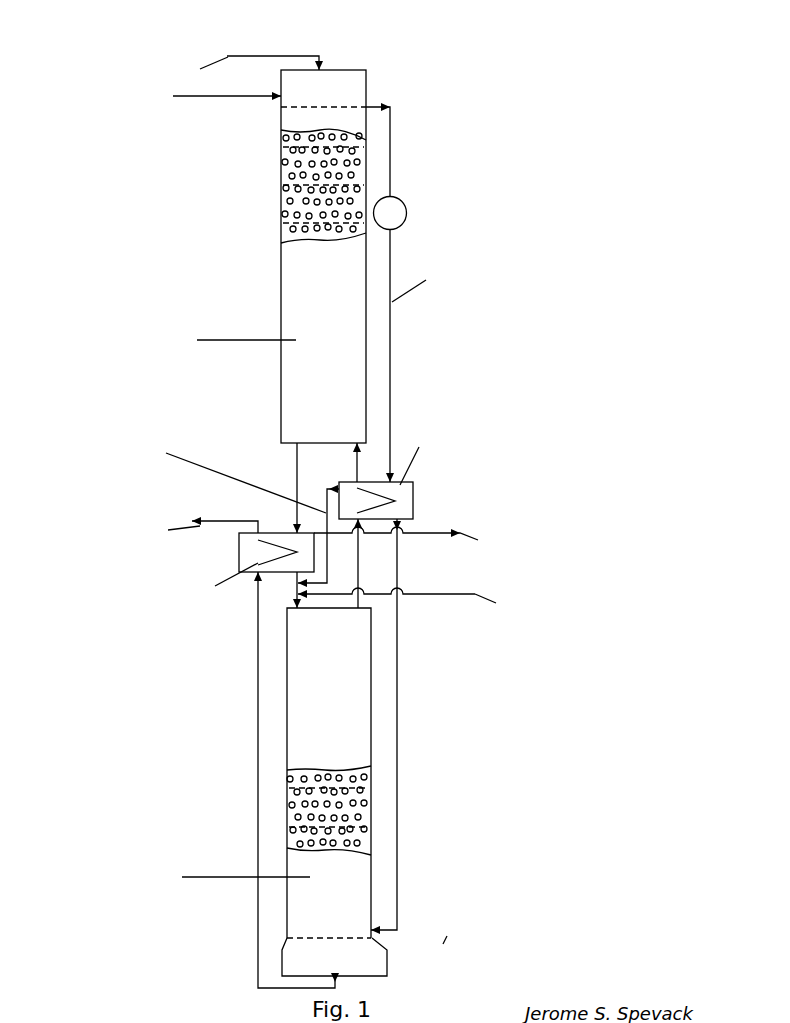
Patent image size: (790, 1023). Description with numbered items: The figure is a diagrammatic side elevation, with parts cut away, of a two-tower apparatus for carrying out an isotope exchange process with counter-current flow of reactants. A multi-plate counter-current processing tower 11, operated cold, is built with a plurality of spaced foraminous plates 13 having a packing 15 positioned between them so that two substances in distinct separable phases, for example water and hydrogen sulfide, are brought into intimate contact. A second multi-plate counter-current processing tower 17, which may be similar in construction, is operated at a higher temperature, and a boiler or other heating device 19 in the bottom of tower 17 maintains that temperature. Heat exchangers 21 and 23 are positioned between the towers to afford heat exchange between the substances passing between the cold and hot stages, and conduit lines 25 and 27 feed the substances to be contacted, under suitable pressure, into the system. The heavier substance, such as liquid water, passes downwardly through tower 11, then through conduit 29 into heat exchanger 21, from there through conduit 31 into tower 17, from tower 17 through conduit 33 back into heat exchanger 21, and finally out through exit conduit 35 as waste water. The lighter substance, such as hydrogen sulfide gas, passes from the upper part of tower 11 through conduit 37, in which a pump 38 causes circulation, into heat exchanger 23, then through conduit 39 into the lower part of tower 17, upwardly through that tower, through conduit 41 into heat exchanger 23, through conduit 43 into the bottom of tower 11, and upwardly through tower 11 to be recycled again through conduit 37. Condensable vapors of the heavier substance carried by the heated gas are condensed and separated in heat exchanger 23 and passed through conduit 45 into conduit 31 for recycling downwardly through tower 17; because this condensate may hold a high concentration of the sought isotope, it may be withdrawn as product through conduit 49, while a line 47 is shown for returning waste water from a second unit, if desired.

The multi-plate counter-current processing tower 11 is at (291, 292).
The foraminous plates 13 is at (287, 222).
The packing 15 is at (287, 153).
The second multi-plate counter-current processing tower 17 is at (360, 706).
The heating device 19 is at (367, 958).
The heat exchanger 21 is at (242, 557).
The heat exchanger 23 is at (415, 486).
The conduit line 25 is at (237, 98).
The conduit line 27 is at (262, 55).
The conduit 29 is at (293, 468).
The conduit 31 is at (293, 592).
The conduit 33 is at (258, 781).
The exit conduit 35 is at (222, 520).
The conduit 37 is at (392, 149).
The pump 38 is at (404, 203).
The conduit 39 is at (400, 567).
The conduit 41 is at (359, 567).
The conduit 43 is at (354, 466).
The conduit 45 is at (327, 567).
The waste water line from 2nd unit 47 is at (425, 596).
The conduit 49 is at (432, 531).